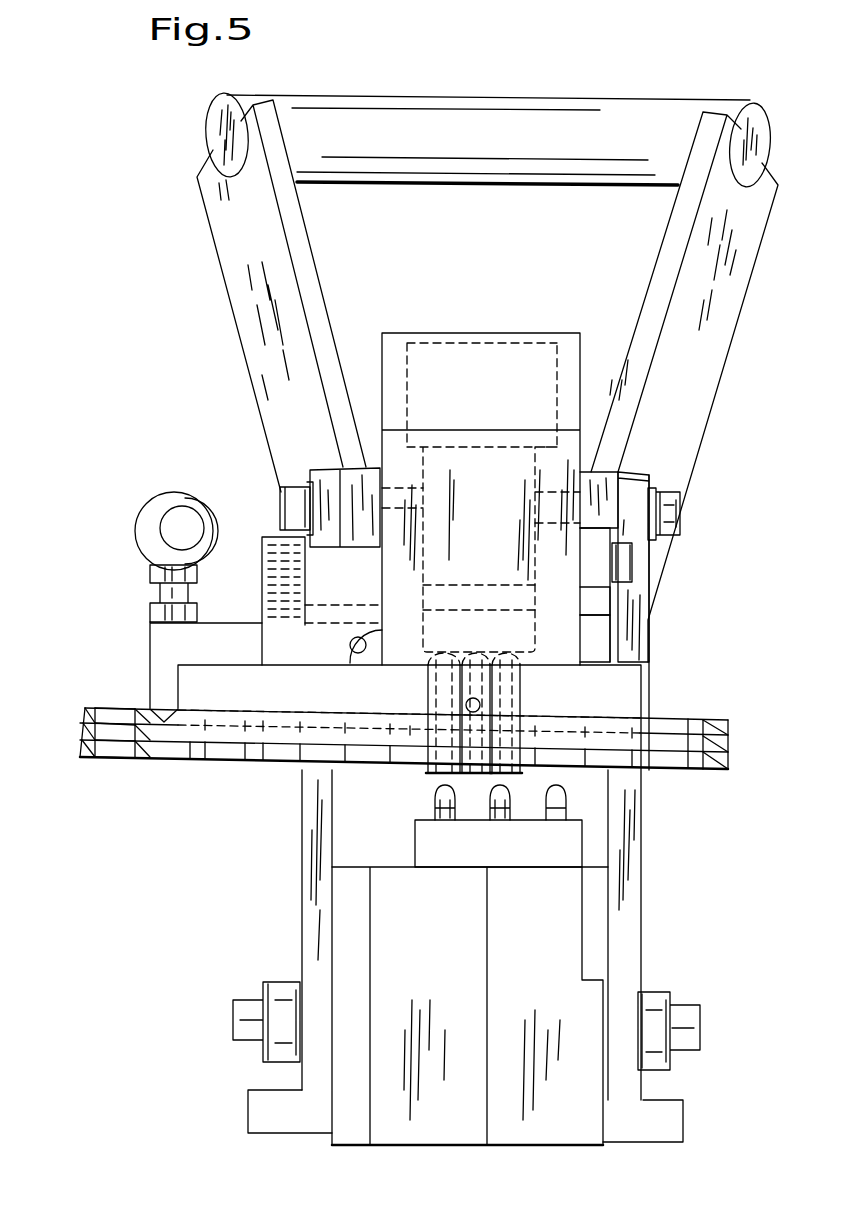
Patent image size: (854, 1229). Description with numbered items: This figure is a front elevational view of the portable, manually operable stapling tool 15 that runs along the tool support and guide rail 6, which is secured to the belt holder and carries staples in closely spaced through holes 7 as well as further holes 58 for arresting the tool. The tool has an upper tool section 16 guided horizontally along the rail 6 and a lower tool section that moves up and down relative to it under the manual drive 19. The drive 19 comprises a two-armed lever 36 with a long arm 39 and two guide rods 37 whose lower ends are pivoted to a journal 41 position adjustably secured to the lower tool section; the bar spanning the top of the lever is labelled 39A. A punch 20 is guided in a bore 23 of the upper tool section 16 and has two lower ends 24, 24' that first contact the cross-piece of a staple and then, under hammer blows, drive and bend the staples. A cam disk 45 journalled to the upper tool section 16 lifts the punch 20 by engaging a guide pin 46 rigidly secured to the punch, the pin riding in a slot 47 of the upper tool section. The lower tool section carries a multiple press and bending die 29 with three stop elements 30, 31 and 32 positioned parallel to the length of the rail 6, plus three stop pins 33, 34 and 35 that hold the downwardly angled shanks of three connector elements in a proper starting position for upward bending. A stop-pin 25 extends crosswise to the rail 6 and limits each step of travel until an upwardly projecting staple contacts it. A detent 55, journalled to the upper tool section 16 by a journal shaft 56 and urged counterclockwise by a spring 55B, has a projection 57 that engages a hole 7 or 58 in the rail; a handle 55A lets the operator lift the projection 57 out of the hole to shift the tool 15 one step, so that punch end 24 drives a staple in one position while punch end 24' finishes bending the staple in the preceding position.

The manual drive 19 is at (634, 88).
The long arm 39 is at (214, 191).
The guide rail 39A is at (402, 190).
The stapling tool 15 is at (190, 318).
The punch 20 is at (497, 360).
The upper tool section 16 is at (568, 462).
The two-armed lever 36 is at (600, 492).
The bore 23 is at (533, 523).
The slot 47 is at (618, 560).
The guide pin 46 is at (597, 600).
The cam disk 45 is at (597, 640).
The handle 55A is at (171, 522).
The detent 55 is at (148, 594).
The spring 55B is at (282, 568).
The journal shaft 56 is at (352, 650).
The projection 57 is at (143, 708).
The holes 58 is at (122, 720).
The through holes 7 is at (712, 713).
The tool support and guide rail 6 is at (76, 753).
The lower end of the punch 24 is at (436, 731).
The lower end of the punch 24' is at (592, 735).
The stop-pin 25 is at (480, 704).
The multiple press and bending die 29 is at (478, 855).
The stop element 30 is at (562, 800).
The stop pin 33 is at (585, 822).
The stop element 32 is at (443, 802).
The stop pin 35 is at (447, 818).
The stop pin 34 is at (498, 817).
The stop element 31 is at (502, 818).
The guide rods 37 is at (316, 945).
The journal 41 is at (246, 1020).